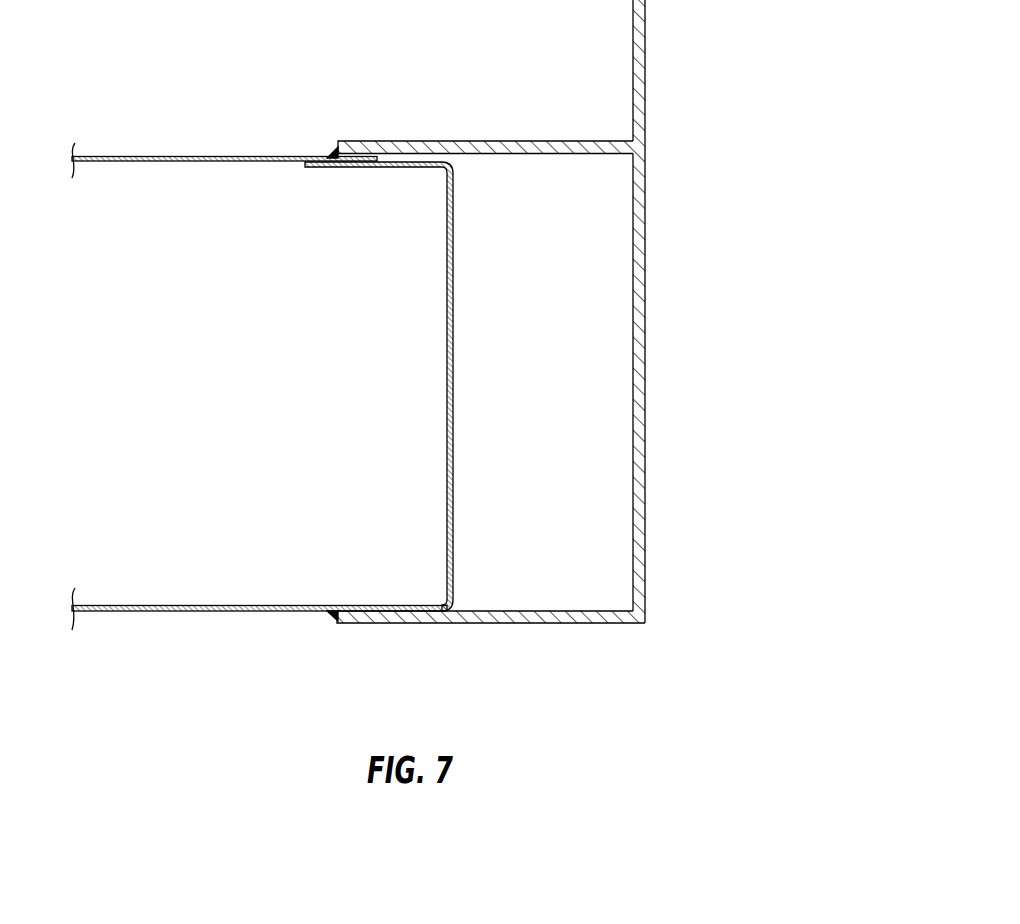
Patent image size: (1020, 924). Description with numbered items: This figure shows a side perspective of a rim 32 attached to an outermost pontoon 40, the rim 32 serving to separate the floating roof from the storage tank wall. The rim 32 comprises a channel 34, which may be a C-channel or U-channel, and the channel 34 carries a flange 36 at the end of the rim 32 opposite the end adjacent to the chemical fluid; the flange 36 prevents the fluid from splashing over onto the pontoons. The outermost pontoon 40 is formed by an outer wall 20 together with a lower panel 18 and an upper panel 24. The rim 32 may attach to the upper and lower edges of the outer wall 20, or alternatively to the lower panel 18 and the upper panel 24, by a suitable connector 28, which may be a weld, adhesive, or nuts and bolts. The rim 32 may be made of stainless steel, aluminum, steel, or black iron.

The lower panel 18 is at (193, 611).
The outer wall 20 is at (455, 418).
The upper panel 24 is at (203, 157).
The connector 28 is at (330, 153).
The rim 32 is at (728, 114).
The channel 34 is at (646, 370).
The flange 36 is at (515, 141).
The outermost pontoon 40 is at (98, 146).